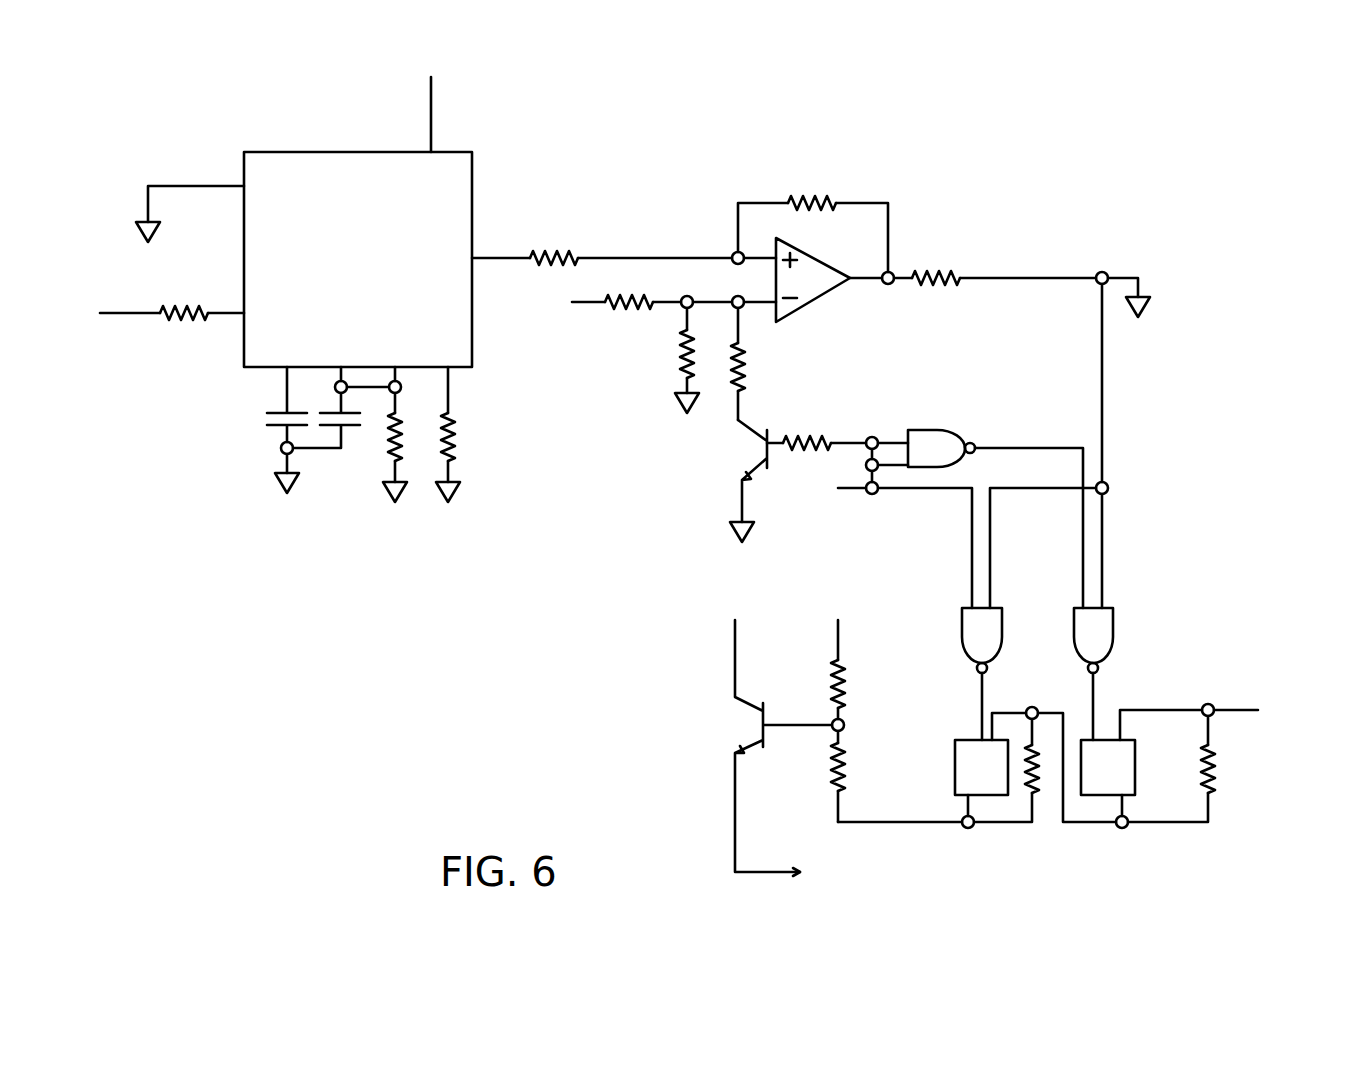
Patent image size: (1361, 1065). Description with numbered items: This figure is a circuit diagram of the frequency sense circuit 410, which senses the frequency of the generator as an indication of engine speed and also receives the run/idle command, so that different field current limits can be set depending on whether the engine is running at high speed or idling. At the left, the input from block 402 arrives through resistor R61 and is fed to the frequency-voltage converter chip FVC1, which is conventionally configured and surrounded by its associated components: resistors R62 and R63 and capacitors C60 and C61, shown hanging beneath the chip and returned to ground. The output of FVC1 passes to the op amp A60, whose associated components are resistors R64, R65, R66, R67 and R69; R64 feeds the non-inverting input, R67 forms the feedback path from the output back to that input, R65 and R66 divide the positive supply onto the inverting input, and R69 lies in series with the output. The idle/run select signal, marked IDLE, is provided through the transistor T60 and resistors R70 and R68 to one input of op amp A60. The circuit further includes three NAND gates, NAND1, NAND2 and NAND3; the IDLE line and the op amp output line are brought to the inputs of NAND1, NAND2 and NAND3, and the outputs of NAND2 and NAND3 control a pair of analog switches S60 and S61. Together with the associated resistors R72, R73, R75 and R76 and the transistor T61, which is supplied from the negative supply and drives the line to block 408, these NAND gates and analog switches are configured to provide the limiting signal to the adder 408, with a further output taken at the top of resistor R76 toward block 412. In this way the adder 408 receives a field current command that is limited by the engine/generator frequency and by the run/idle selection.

The frequency-voltage converter chip FVC1 is at (472, 203).
The resistor R61 is at (202, 303).
The resistor R62 is at (469, 434).
The resistor R63 is at (406, 436).
The resistor R64 is at (624, 246).
The resistor R65 is at (643, 292).
The resistor R66 is at (668, 360).
The resistor R67 is at (813, 221).
The resistor R68 is at (761, 364).
The resistor R69 is at (1000, 281).
The resistor R70 is at (816, 430).
The resistor R72 is at (849, 655).
The resistor R73 is at (862, 776).
The resistor R75 is at (1040, 782).
The resistor R76 is at (1194, 763).
The capacitor C60 is at (264, 430).
The capacitor C61 is at (360, 428).
The op amp A60 is at (815, 300).
The transistor T60 is at (765, 438).
The transistor T61 is at (770, 707).
The NAND gate NAND1 is at (962, 413).
The NAND gate NAND2 is at (957, 625).
The NAND gate NAND3 is at (1115, 625).
The analog switch S60 is at (1000, 780).
The analog switch S61 is at (1128, 780).
The idle signal input IDLE is at (944, 446).
The frequency sense circuit 410 is at (610, 612).
The input from block 402 is at (92, 348).
The adder 408 is at (900, 888).
The output to block 412 is at (1352, 728).